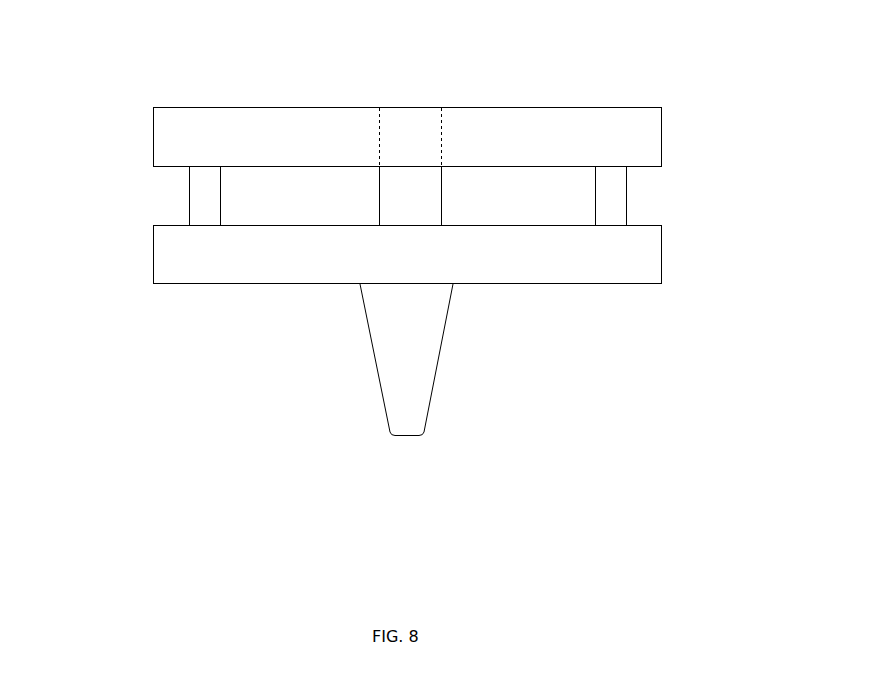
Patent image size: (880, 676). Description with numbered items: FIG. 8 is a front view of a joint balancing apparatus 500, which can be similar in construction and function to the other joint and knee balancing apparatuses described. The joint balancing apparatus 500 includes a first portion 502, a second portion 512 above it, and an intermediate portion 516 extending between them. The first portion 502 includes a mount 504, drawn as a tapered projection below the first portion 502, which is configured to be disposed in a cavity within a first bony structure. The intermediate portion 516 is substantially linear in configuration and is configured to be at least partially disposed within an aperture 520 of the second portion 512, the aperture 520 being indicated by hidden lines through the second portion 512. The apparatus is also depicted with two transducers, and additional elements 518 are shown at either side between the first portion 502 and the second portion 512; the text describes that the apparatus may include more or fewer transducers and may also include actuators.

The joint balancing apparatus 500 is at (148, 323).
The first portion 502 is at (538, 263).
The mount 504 is at (422, 373).
The second portion 512 is at (543, 123).
The intermediate portion 516 is at (391, 179).
The side posts 518 is at (200, 185).
The aperture 520 is at (428, 122).